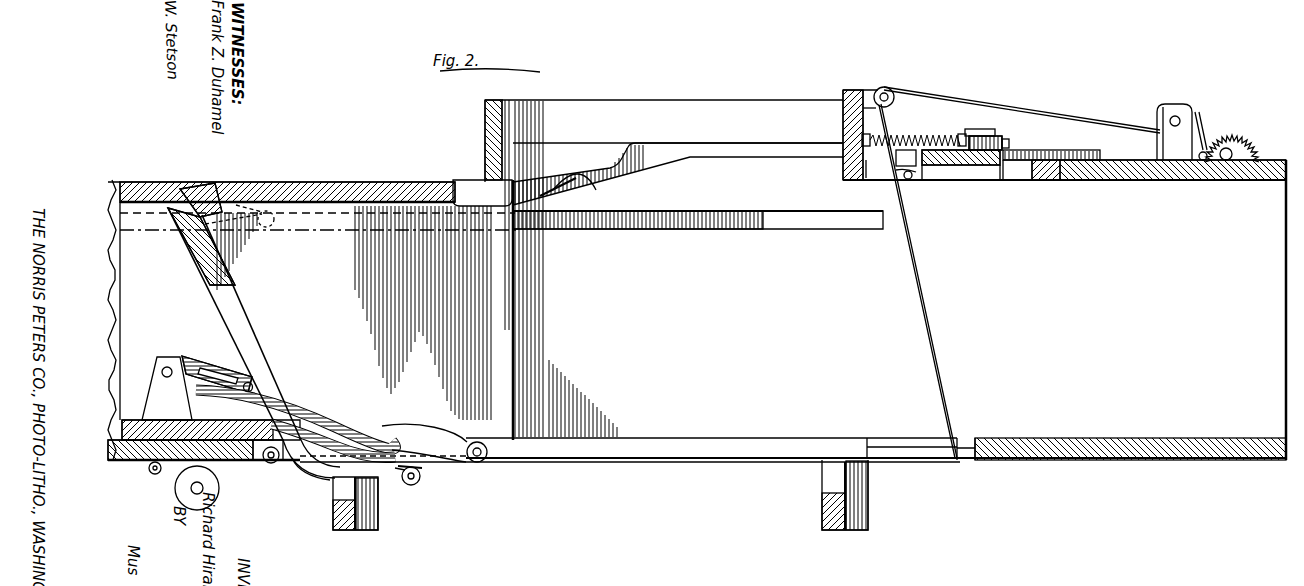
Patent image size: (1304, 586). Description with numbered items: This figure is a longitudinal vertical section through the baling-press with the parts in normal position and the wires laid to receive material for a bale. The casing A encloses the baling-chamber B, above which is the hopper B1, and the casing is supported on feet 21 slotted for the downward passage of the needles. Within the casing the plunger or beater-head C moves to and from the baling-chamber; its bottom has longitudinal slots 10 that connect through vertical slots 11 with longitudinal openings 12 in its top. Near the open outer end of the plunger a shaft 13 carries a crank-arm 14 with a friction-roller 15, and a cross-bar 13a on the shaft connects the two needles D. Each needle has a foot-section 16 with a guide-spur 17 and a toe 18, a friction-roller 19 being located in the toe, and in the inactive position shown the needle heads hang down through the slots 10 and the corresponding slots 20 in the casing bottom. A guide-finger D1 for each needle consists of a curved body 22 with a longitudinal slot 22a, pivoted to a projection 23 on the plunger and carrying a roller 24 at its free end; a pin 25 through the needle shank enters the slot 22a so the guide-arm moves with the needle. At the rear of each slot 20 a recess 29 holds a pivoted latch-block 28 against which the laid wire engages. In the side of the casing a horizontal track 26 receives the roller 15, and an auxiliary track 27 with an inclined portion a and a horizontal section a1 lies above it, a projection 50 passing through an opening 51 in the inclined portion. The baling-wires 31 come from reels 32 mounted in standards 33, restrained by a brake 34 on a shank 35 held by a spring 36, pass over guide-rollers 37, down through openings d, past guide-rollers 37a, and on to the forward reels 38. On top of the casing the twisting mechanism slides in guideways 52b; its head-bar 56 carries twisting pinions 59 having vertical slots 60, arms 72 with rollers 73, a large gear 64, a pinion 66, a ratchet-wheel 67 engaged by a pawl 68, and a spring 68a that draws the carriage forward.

The plunger or beater-head C is at (314, 320).
The crank-arm 14 is at (246, 204).
The friction-roller 15 is at (266, 227).
The reel 38 is at (219, 490).
The guide-roller 37a is at (272, 464).
The projection 23 is at (167, 388).
The guide-finger D1 is at (204, 363).
The longitudinal slot 22a is at (295, 419).
The curved body 22 is at (346, 422).
The longitudinal slot 10 is at (400, 426).
The roller 24 is at (480, 463).
The guide-spur 17 is at (402, 487).
The friction-roller 19 is at (418, 485).
The toe 18 is at (422, 470).
The shaft 13 is at (212, 186).
The cross-bar 13a is at (206, 262).
The needle D is at (258, 337).
The pin 25 is at (253, 386).
The foot-section 16 is at (326, 474).
The foot 21 is at (365, 531).
The slot 20 is at (793, 450).
The recess 29 is at (873, 440).
The latch-block 28 is at (900, 447).
The longitudinal opening 12 is at (476, 183).
The vertical slot 11 is at (497, 343).
The hopper B1 is at (672, 108).
The horizontal section a1 is at (777, 143).
The projection 50 is at (590, 184).
The auxiliary track 27 is at (588, 174).
The opening 51 is at (561, 192).
The inclined portion a is at (539, 168).
The horizontal track 26 is at (627, 229).
The baling-chamber B is at (613, 291).
The roller 73 is at (900, 222).
The guide-roller 37 is at (889, 87).
The baling-wire 31 is at (922, 304).
The spring 68a is at (921, 137).
The pawl 68 is at (976, 120).
The ratchet-wheel 67 is at (1000, 134).
The pinion 66 is at (1010, 142).
The twisting pinion 59 is at (950, 182).
The vertical slot 60 is at (894, 165).
The arm 72 is at (914, 184).
The opening d is at (872, 180).
The head-bar 56 is at (995, 183).
The large gear 64 is at (1058, 182).
The casing A is at (1121, 310).
The guideway 52b is at (1095, 146).
The reel 32 is at (1170, 106).
The brake 34 is at (1200, 114).
The shank 35 is at (1236, 132).
The standard 33 is at (1186, 150).
The spring 36 is at (1197, 166).